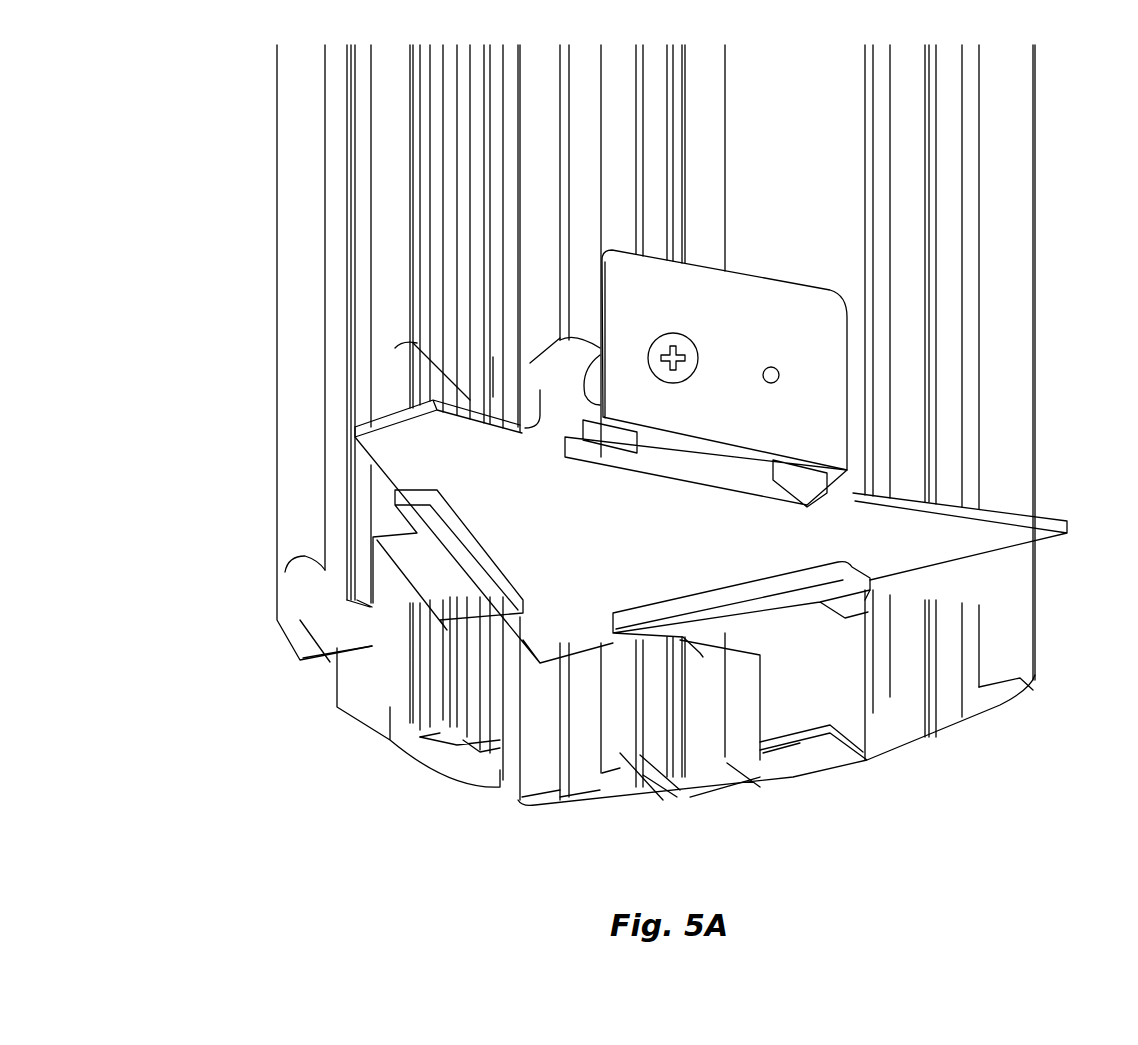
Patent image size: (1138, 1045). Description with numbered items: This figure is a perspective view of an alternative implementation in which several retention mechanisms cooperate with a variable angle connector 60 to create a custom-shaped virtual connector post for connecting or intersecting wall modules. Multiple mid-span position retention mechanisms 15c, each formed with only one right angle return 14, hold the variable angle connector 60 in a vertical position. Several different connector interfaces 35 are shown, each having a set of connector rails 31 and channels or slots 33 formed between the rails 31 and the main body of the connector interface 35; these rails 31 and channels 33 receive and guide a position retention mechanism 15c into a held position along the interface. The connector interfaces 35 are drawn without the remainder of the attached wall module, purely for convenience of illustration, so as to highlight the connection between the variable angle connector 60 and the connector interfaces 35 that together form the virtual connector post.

The right angle return 14 is at (472, 565).
The mid-span position retention mechanism 15c is at (810, 312).
The connector rail 31 is at (457, 737).
The channel 33 is at (465, 735).
The connector interface 35 is at (176, 671).
The variable angle connector 60 is at (583, 627).